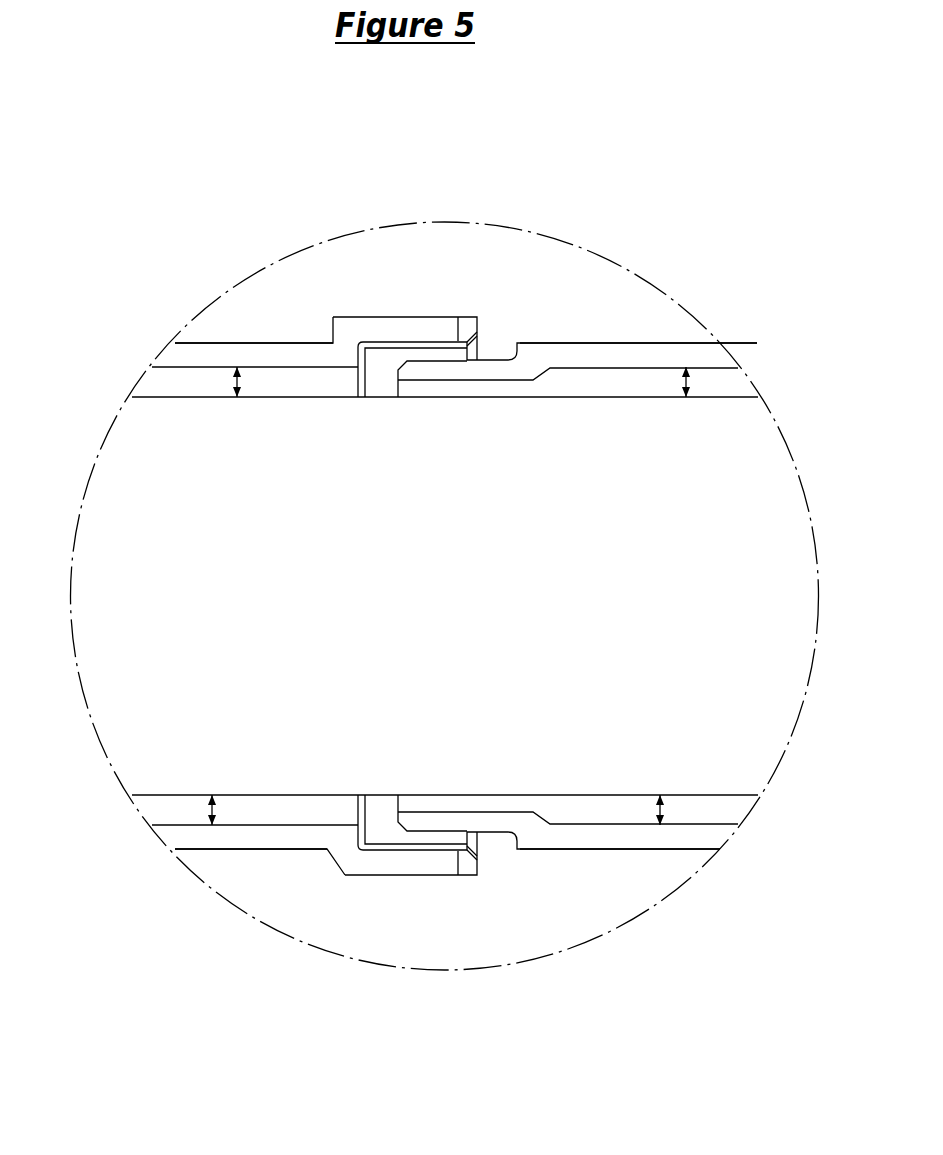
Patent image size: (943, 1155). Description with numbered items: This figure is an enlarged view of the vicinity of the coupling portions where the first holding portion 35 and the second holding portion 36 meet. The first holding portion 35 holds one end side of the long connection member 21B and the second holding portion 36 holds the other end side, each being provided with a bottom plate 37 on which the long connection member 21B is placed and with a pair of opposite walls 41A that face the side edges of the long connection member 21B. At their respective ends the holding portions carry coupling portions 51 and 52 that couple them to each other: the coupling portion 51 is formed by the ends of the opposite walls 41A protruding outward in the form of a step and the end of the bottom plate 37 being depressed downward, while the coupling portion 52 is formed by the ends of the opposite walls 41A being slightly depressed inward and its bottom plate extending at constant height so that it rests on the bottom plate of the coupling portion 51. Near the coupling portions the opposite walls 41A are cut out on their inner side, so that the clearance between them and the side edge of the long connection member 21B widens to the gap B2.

The long connection member 21B is at (761, 434).
The first holding portion 35 is at (230, 873).
The second holding portion 36 is at (589, 883).
The bottom plate 37 is at (285, 385).
The opposite wall 41A is at (297, 357).
The coupling portion 51 is at (402, 327).
The coupling portion 52 is at (497, 372).
The gap B2 is at (236, 382).